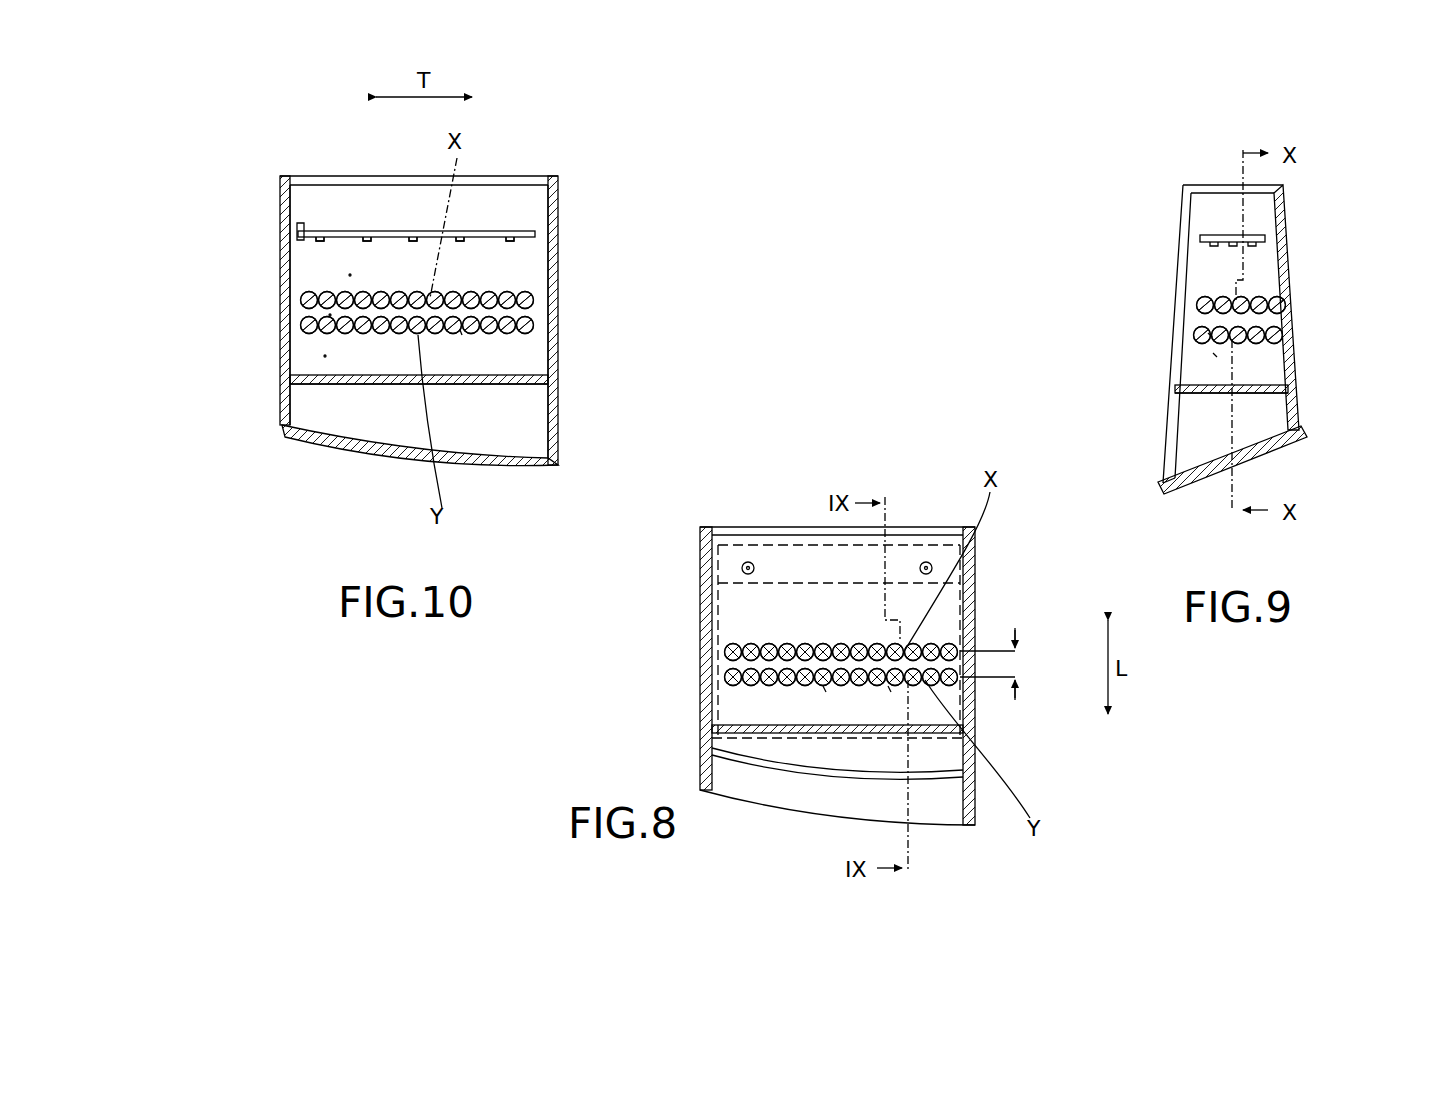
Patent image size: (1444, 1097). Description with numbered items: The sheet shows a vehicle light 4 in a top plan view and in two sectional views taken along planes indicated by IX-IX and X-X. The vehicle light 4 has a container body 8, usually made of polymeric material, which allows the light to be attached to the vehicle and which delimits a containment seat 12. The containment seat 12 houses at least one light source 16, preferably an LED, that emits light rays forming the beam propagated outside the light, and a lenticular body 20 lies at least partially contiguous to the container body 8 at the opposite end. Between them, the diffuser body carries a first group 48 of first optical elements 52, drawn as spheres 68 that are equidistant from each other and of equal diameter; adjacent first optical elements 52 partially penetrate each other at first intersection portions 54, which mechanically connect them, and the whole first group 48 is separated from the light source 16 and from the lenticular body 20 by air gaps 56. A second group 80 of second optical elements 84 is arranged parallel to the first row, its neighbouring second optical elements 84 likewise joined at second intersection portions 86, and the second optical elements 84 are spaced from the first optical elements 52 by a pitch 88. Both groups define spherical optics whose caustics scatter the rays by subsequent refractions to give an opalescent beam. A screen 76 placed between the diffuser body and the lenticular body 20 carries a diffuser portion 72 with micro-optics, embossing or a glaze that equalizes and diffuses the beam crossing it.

In FIG. 10, the vehicle light 4 is at (245, 145).
In FIG. 8, the vehicle light 4 is at (778, 475).
In FIG. 9, the vehicle light 4 is at (1125, 165).
In FIG. 10, the container body 8 is at (560, 262).
In FIG. 10, the containment seat 12 is at (338, 268).
In FIG. 8, the containment seat 12 is at (765, 625).
In FIG. 9, the containment seat 12 is at (1192, 275).
In FIG. 10, the light source 16 is at (512, 232).
In FIG. 10, the lenticular body 20 is at (315, 445).
In FIG. 8, the lenticular body 20 is at (745, 780).
In FIG. 9, the lenticular body 20 is at (1290, 445).
In FIG. 10, the first group 48 is at (536, 302).
In FIG. 8, the first group 48 is at (722, 655).
In FIG. 9, the first group 48 is at (1292, 305).
In FIG. 10, the first optical elements 52 is at (417, 300).
In FIG. 8, the first optical elements 52 is at (841, 652).
In FIG. 9, the first optical elements 52 is at (1241, 305).
In FIG. 10, the first intersection portions 54 is at (497, 292).
In FIG. 9, the first intersection portions 54 is at (1210, 298).
In FIG. 10, the air gaps 56 is at (343, 275).
In FIG. 8, the spheres 68 is at (825, 690).
In FIG. 9, the spheres 68 is at (1210, 335).
In FIG. 10, the diffuser portion 72 is at (398, 390).
In FIG. 9, the diffuser portion 72 is at (1195, 398).
In FIG. 10, the screen 76 is at (548, 378).
In FIG. 8, the screen 76 is at (975, 718).
In FIG. 9, the screen 76 is at (1268, 393).
In FIG. 10, the second group 80 is at (536, 325).
In FIG. 8, the second group 80 is at (720, 680).
In FIG. 9, the second group 80 is at (1292, 335).
In FIG. 10, the second optical elements 84 is at (417, 325).
In FIG. 8, the second optical elements 84 is at (841, 677).
In FIG. 9, the second optical elements 84 is at (1238, 335).
In FIG. 10, the second intersection portions 86 is at (460, 335).
In FIG. 8, the second intersection portions 86 is at (890, 690).
In FIG. 9, the second intersection portions 86 is at (1215, 355).
In FIG. 8, the pitch 88 is at (1003, 664).